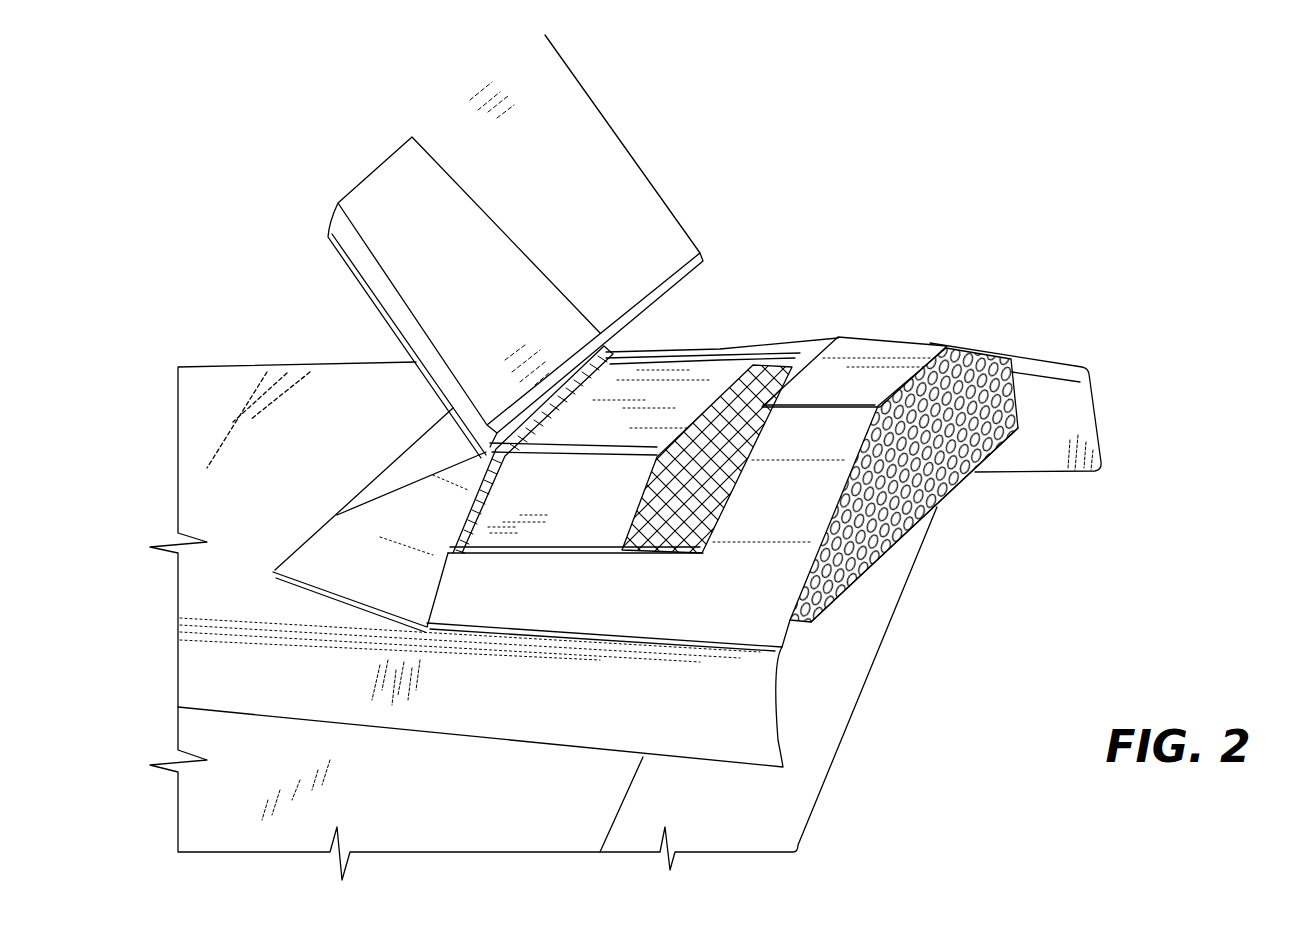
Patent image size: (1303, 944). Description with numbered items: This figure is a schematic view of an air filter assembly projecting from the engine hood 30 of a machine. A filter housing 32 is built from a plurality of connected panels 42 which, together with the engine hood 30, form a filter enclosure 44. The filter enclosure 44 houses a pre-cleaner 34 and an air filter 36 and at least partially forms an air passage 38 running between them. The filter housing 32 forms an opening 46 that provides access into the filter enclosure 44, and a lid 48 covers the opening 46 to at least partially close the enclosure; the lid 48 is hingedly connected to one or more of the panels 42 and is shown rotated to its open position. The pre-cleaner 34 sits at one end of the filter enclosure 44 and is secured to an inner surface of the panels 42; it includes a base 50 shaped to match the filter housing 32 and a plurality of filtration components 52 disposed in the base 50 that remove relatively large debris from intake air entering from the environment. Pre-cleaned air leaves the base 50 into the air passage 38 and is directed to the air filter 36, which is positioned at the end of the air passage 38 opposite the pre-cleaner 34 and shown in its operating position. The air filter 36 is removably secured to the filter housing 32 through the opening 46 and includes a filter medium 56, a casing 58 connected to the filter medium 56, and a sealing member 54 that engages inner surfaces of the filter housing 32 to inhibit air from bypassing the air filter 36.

The engine hood 30 is at (233, 510).
The filter housing 32 is at (772, 628).
The pre-cleaner 34 is at (993, 443).
The air filter 36 is at (690, 346).
The air passage 38 is at (660, 553).
The panels 42 is at (402, 473).
The filter enclosure 44 is at (815, 422).
The opening 46 is at (768, 383).
The lid 48 is at (613, 182).
The base 50 is at (923, 512).
The filtration components 52 is at (863, 530).
The sealing member 54 is at (602, 347).
The filter medium 56 is at (700, 495).
The casing 58 is at (613, 493).